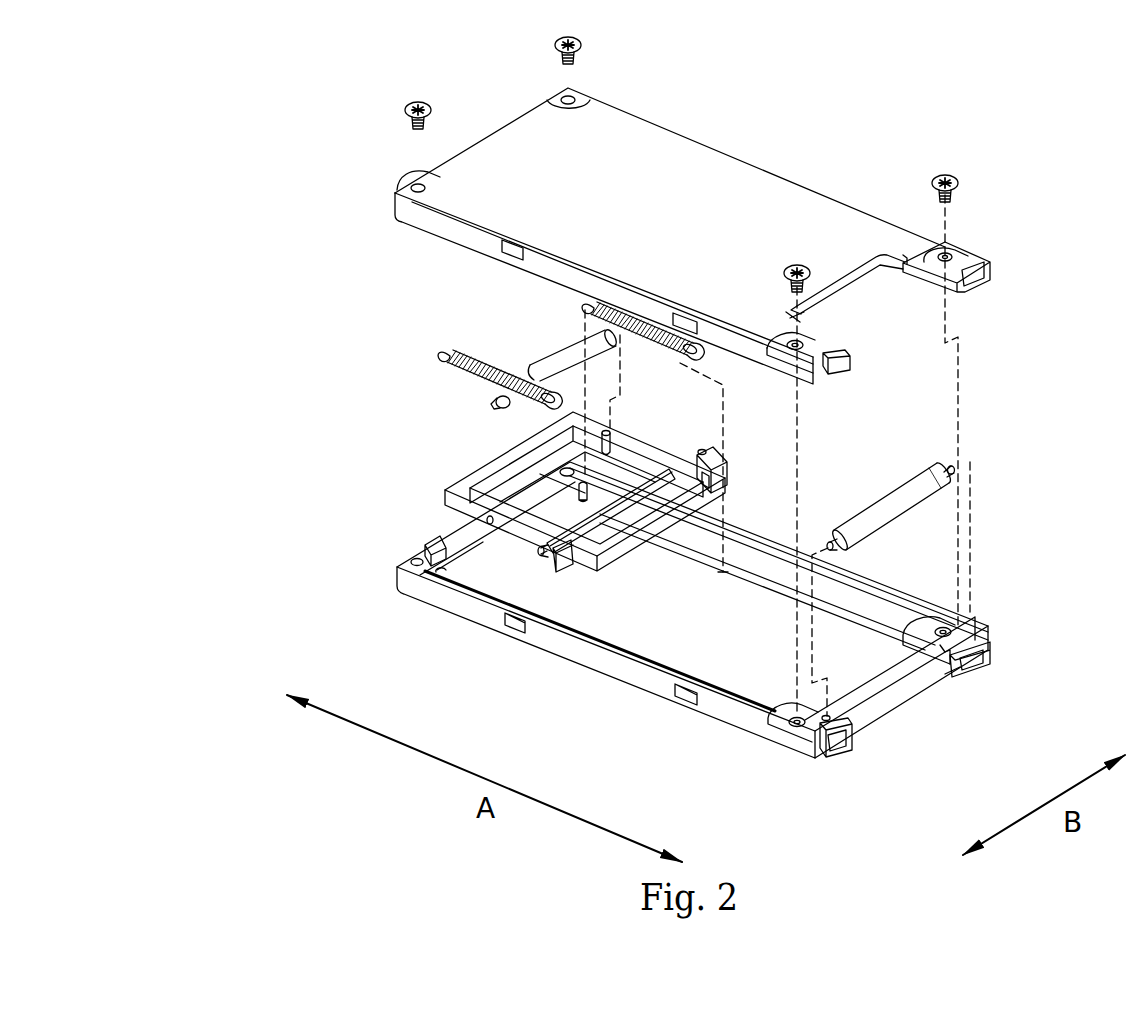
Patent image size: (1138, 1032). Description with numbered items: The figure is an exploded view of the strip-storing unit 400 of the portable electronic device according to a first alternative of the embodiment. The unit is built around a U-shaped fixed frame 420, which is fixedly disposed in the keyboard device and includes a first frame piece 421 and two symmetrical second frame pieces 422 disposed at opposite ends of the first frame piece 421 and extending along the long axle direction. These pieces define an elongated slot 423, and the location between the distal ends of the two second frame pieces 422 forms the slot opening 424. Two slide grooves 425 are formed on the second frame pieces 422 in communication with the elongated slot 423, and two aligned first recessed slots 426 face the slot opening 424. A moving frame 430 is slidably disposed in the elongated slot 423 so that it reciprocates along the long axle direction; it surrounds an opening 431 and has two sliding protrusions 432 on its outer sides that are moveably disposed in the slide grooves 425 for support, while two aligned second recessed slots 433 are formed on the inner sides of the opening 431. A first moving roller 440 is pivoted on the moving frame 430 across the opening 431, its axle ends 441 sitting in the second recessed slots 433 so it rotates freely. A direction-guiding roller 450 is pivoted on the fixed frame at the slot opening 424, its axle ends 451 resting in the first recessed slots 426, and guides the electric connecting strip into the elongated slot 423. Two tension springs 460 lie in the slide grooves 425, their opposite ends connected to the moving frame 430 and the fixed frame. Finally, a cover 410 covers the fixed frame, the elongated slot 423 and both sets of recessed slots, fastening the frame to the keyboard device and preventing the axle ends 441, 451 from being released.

The strip-storing unit 400 is at (1014, 78).
The cover 410 is at (724, 176).
The U-shaped fixed frame 420 is at (613, 613).
The first frame piece 421 is at (430, 538).
The second frame pieces 422 is at (587, 657).
The elongated slot 423 is at (688, 646).
The slot opening 424 is at (916, 707).
The slide grooves 425 is at (880, 608).
The first recessed slots 426 is at (828, 714).
The moving frame 430 is at (600, 492).
The opening 431 is at (600, 527).
The sliding protrusions 432 is at (722, 456).
The second recessed slots 433 is at (612, 437).
The first moving roller 440 is at (522, 364).
The axle ends 441 is at (494, 405).
The direction-guiding roller 450 is at (934, 471).
The axle ends 451 is at (955, 471).
The tension springs 460 is at (456, 377).